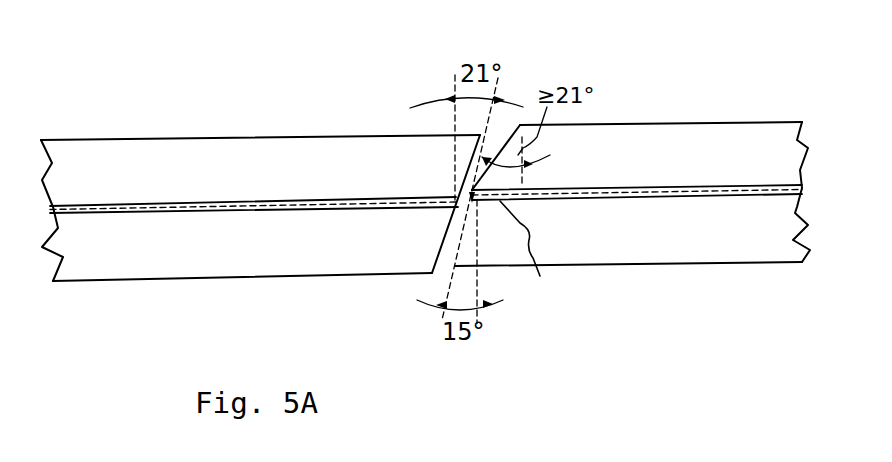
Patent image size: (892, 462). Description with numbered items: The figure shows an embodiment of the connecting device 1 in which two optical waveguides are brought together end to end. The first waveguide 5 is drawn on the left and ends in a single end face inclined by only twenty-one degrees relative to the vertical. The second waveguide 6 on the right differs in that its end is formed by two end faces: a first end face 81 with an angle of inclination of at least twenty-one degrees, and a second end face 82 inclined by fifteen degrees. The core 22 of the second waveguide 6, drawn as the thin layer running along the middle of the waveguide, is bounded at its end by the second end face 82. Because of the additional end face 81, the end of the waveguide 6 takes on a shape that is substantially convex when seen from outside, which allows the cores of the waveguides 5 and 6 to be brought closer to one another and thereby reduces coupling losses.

The connecting device 1 is at (532, 44).
The first waveguide 5 is at (148, 139).
The second waveguide 6 is at (666, 124).
The core 22 is at (688, 196).
The first end face 81 is at (483, 171).
The second end face 82 is at (458, 248).